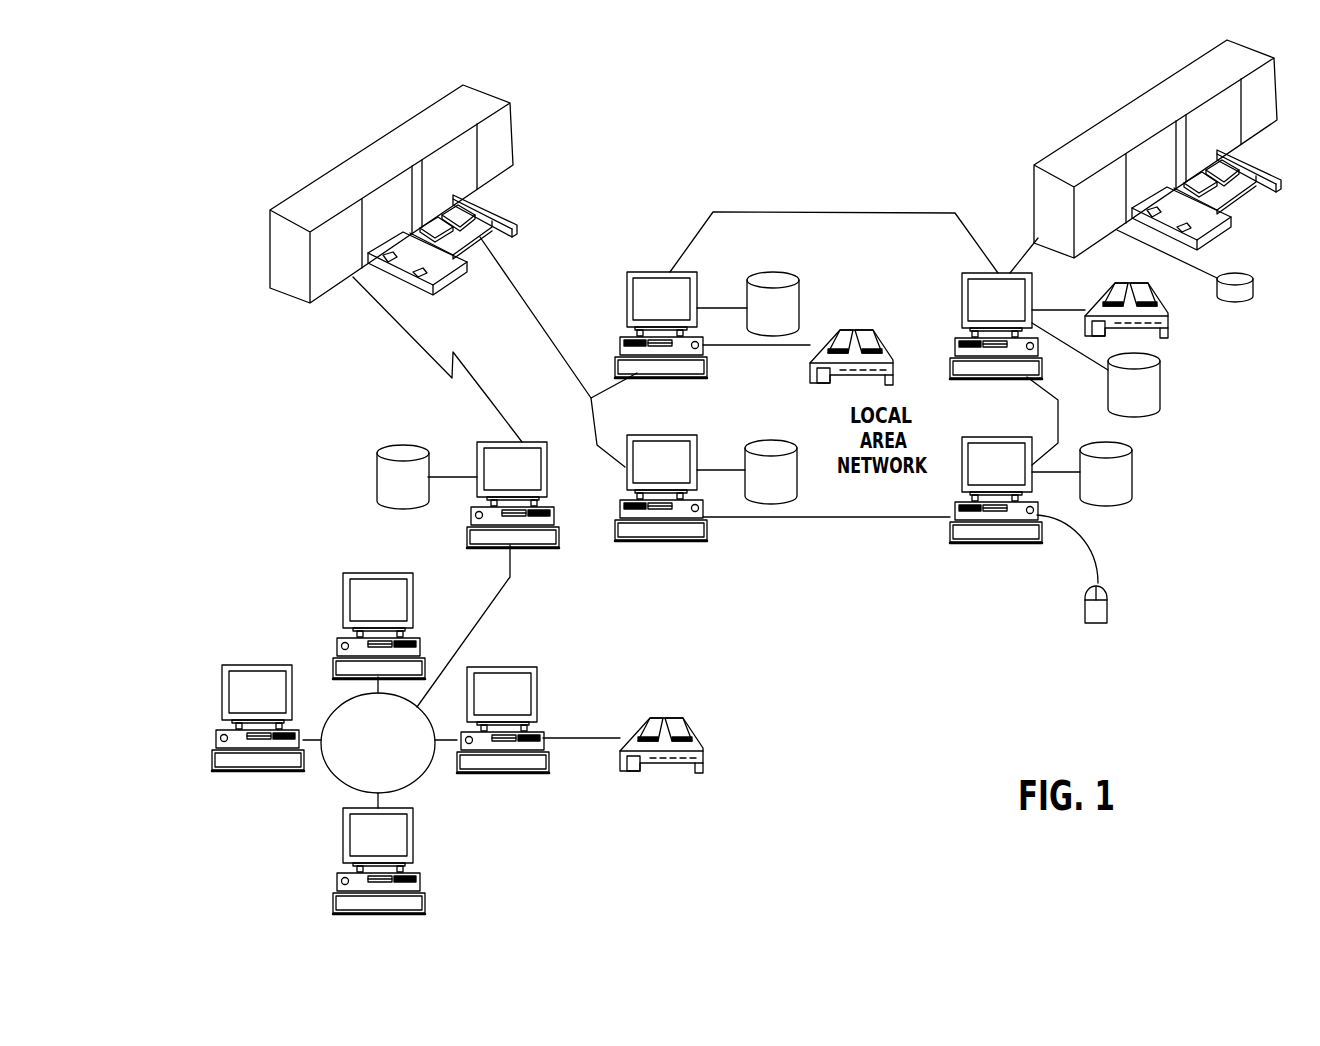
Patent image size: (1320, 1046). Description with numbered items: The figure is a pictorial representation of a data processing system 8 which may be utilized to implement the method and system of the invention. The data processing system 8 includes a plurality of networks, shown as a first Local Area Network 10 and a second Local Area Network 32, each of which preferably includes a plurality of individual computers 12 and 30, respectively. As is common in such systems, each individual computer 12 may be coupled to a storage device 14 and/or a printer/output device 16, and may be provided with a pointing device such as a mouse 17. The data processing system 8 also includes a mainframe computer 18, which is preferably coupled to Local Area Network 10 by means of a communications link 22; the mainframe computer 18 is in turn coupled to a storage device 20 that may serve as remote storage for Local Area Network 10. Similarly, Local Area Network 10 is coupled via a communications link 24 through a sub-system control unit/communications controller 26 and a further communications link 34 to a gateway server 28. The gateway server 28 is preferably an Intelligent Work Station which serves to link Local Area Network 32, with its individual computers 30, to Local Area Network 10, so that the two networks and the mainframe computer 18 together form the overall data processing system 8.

The data processing system 8 is at (895, 203).
The Local Area Network 10 is at (817, 517).
The individual computer 12 is at (645, 270).
The storage device 14 is at (787, 270).
The printer/output device 16 is at (880, 337).
The mouse 17 is at (1107, 608).
The mainframe computer 18 is at (1117, 112).
The storage device 20 is at (1227, 302).
The communications link 22 is at (1004, 220).
The communications link 24 is at (523, 297).
The sub-system control unit/communications controller 26 is at (327, 173).
The gateway server 28 is at (477, 445).
The individual computer 30 is at (342, 595).
The Local Area Network 32 is at (327, 770).
The communications link 34 is at (387, 320).